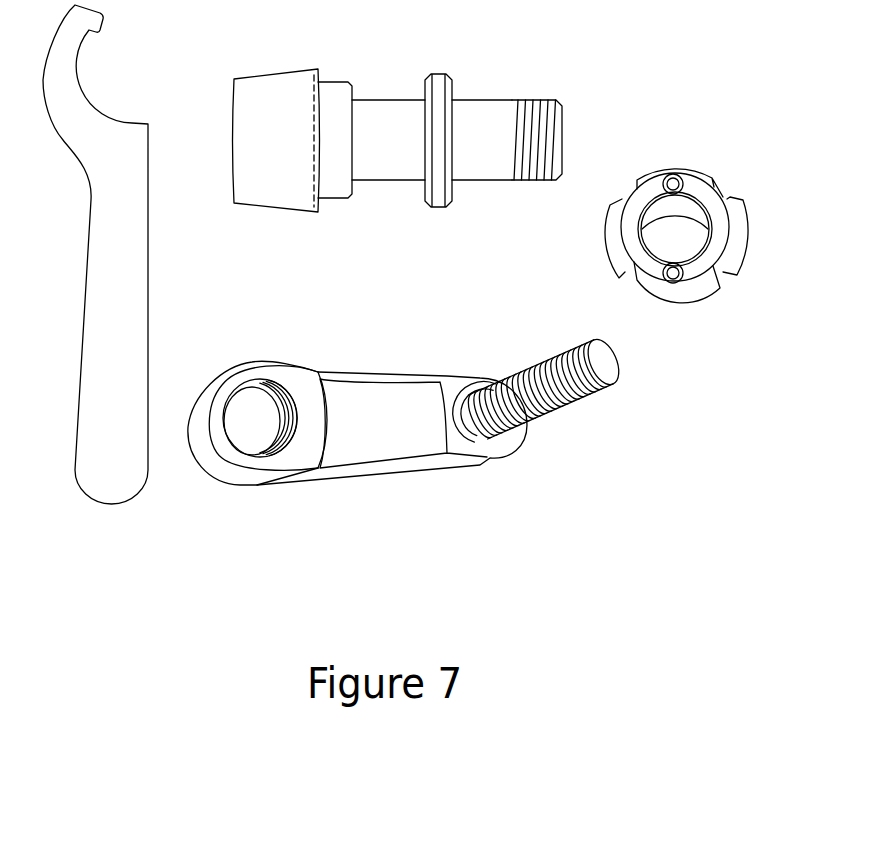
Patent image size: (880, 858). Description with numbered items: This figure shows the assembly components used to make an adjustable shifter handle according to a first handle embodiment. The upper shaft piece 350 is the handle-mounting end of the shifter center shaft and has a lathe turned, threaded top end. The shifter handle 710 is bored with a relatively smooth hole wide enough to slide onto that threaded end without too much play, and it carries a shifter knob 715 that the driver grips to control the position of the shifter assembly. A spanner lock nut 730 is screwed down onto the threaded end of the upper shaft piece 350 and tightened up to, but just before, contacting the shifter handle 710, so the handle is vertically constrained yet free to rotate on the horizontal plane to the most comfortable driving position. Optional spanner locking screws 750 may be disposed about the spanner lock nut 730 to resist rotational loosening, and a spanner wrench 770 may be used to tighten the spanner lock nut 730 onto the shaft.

The spanner wrench 770 is at (98, 108).
The upper shaft piece 350 is at (472, 97).
The spanner lock nut 730 is at (668, 167).
The spanner locking screws 750 is at (679, 281).
The shifter handle 710 is at (288, 377).
The shifter knob 715 is at (557, 407).